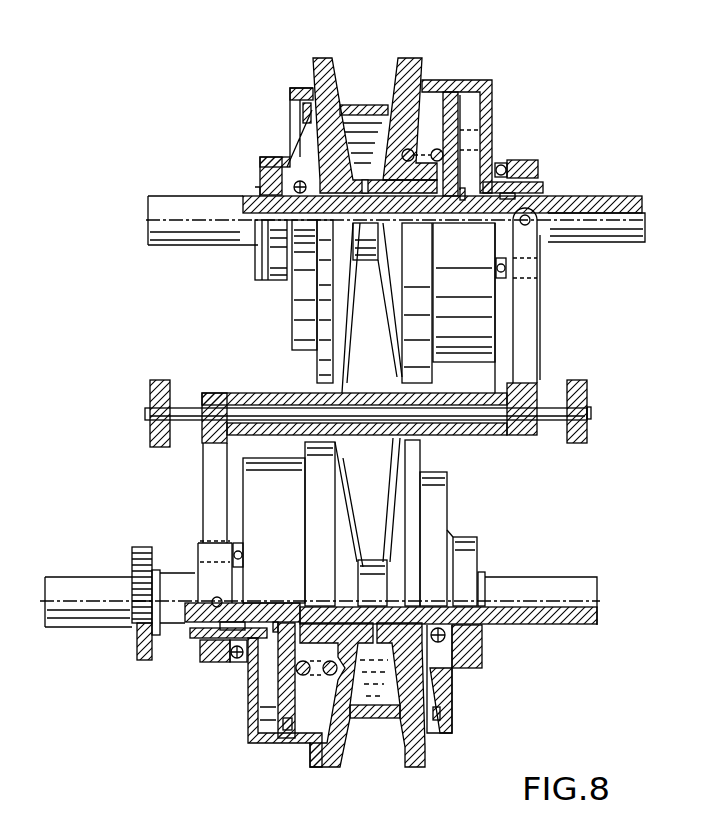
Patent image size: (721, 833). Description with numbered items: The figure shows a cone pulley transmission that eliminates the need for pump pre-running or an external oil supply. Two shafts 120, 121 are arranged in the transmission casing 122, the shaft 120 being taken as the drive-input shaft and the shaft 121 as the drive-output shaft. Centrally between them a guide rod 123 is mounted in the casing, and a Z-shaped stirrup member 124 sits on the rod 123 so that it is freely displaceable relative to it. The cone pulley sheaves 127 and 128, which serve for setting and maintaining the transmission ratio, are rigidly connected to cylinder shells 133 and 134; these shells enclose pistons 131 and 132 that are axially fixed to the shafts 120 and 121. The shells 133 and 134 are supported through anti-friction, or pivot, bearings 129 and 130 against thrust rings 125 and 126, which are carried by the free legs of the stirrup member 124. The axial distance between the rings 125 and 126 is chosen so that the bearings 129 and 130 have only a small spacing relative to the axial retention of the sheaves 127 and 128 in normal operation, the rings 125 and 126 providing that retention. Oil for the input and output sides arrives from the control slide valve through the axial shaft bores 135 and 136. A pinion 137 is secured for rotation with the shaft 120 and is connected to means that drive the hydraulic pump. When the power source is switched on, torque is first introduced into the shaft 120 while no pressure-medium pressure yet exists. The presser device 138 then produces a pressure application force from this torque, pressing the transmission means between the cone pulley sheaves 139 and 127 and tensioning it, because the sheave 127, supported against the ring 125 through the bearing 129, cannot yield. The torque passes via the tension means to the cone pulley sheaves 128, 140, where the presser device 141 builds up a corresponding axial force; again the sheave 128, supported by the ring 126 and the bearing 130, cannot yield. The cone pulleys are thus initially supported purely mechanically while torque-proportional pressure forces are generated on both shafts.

The shaft 120 is at (557, 617).
The shaft 121 is at (583, 205).
The transmission casing 122 is at (585, 390).
The guide rod 123 is at (550, 410).
The Z-shaped stirrup member 124 is at (248, 393).
The thrust ring 125 is at (200, 655).
The thrust ring 126 is at (532, 170).
The cone pulley sheave 127 is at (332, 753).
The cone pulley sheave 128 is at (400, 60).
The anti-friction bearing 129 is at (232, 658).
The anti-friction bearing 130 is at (497, 168).
The piston 131 is at (284, 725).
The piston 132 is at (440, 100).
The cylinder shell 133 is at (256, 743).
The cylinder shell 134 is at (478, 82).
The axial shaft bore 135 is at (523, 603).
The axial shaft bore 136 is at (627, 212).
The pinion 137 is at (143, 543).
The presser device 138 is at (478, 655).
The cone pulley sheave 139 is at (413, 753).
The cone pulley sheave 140 is at (322, 62).
The presser device 141 is at (293, 180).